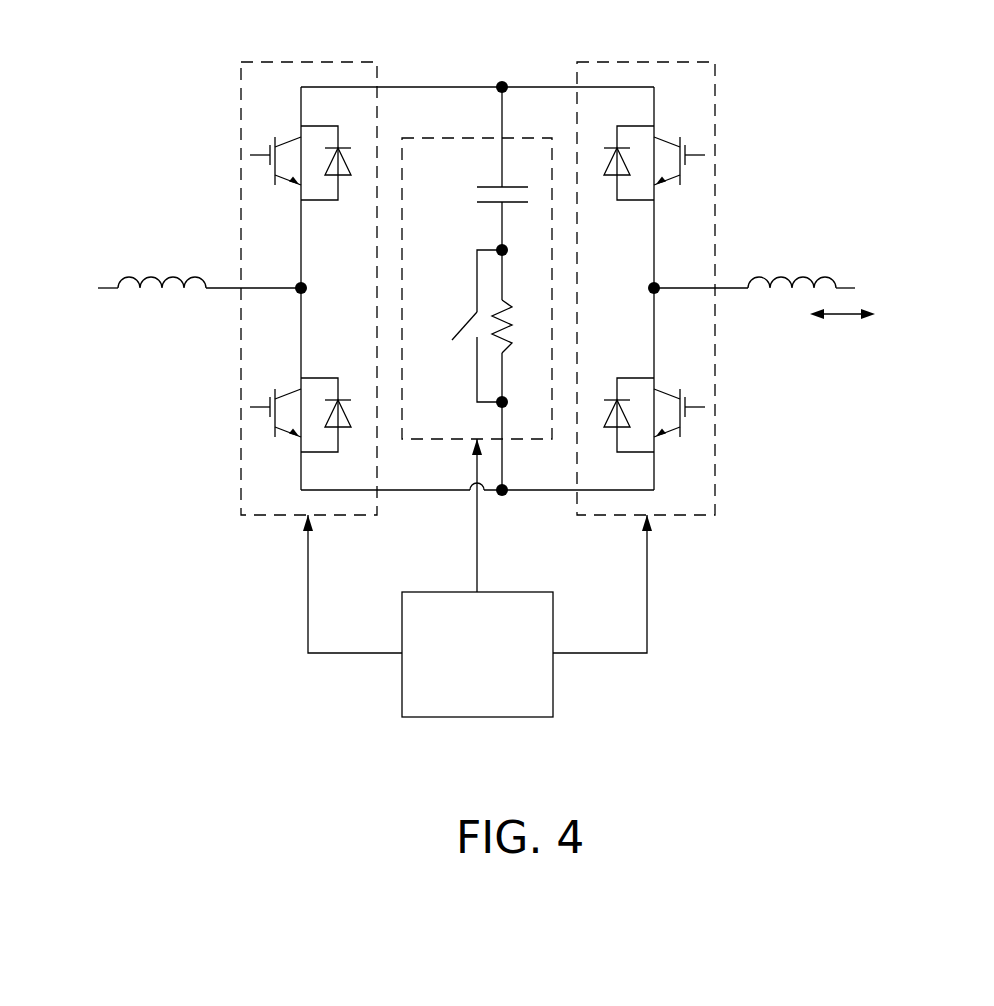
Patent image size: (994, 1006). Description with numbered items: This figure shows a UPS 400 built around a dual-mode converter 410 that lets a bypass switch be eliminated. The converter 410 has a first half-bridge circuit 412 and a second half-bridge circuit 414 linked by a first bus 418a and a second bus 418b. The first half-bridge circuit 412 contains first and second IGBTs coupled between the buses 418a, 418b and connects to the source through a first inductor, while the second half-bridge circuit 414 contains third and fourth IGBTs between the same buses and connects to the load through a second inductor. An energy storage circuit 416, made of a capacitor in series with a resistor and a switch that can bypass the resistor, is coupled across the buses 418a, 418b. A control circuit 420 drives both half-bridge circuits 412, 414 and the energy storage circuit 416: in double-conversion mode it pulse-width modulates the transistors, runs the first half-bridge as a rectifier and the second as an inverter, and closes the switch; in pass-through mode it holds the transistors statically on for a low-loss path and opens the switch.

The UPS 400 is at (469, 417).
The converter 410 is at (469, 391).
The first half-bridge circuit 412 is at (308, 62).
The second half-bridge circuit 414 is at (647, 62).
The energy storage circuit 416 is at (477, 138).
The first bus 418a is at (477, 86).
The second bus 418b is at (452, 491).
The control circuit 420 is at (477, 717).